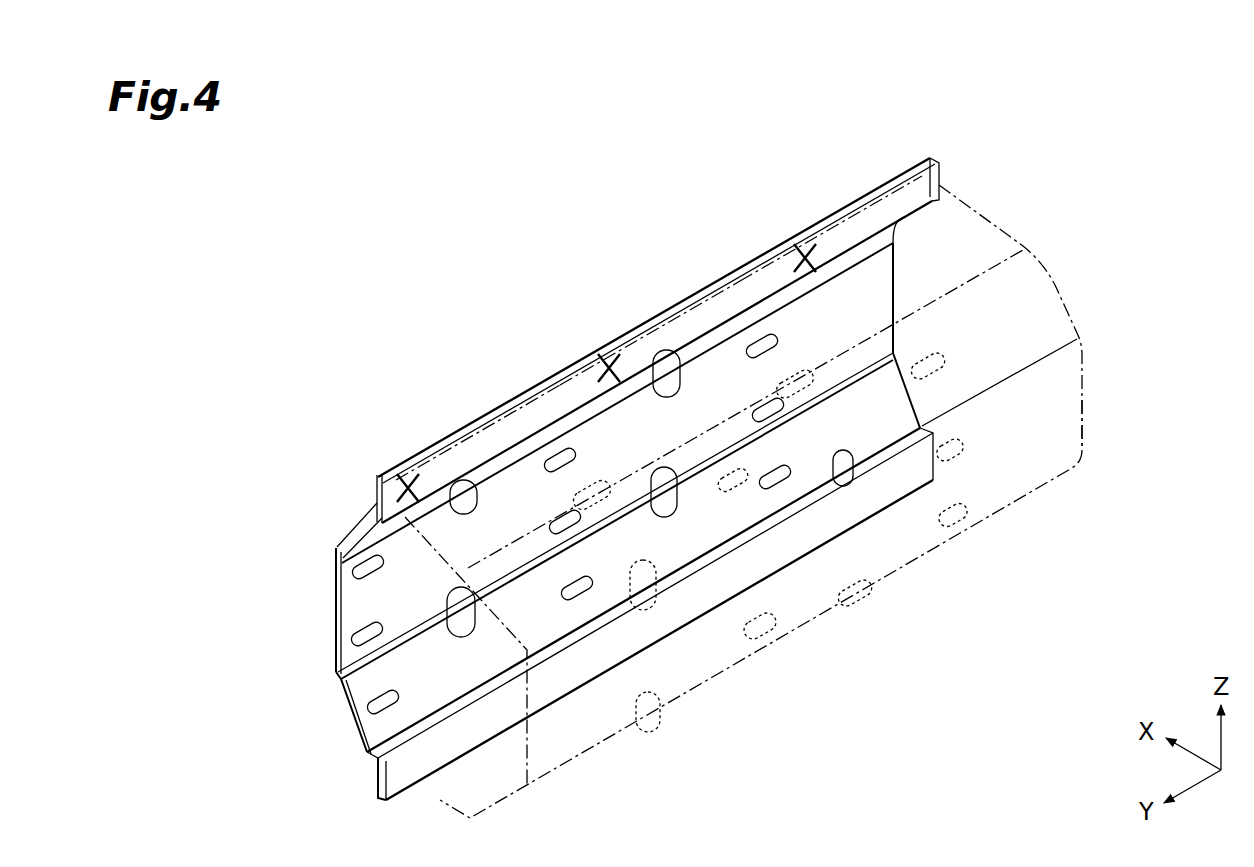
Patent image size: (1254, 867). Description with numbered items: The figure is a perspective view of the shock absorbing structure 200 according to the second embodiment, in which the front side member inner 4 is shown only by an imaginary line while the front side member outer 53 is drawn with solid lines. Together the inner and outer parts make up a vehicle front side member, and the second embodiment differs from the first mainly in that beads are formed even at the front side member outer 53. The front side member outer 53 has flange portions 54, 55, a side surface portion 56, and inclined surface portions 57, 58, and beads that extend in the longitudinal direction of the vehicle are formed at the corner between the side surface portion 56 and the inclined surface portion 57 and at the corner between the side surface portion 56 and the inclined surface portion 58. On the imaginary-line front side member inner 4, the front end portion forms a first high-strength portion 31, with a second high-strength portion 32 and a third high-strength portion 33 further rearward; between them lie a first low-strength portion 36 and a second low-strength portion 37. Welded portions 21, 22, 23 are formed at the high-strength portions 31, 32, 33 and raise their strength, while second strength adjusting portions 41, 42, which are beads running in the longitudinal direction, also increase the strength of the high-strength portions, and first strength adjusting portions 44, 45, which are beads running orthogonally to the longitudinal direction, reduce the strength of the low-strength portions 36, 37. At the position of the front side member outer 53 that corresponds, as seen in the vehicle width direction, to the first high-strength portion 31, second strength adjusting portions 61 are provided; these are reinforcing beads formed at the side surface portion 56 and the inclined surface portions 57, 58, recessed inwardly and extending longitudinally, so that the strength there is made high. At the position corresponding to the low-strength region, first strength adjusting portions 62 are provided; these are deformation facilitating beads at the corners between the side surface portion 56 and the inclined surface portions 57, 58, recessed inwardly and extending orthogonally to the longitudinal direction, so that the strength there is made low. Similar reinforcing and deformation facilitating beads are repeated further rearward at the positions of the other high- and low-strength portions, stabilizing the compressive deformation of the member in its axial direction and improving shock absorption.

The shock absorbing structure 200 is at (432, 192).
The front side member inner 4 is at (1053, 278).
The front side member outer 53 is at (318, 633).
The flange portion 54 is at (376, 488).
The flange portion 55 is at (372, 773).
The side surface portion 56 is at (336, 598).
The inclined surface portion 57 is at (350, 522).
The inclined surface portion 58 is at (354, 722).
The second strength adjusting portion 61 is at (400, 696).
The first strength adjusting portion 62 is at (470, 588).
The first low-strength portion 36 is at (490, 404).
The second low-strength portion 37 is at (690, 292).
The welded portion 21 is at (420, 472).
The welded portion 22 is at (600, 365).
The welded portion 23 is at (796, 252).
The first high-strength portion 31 is at (400, 463).
The second high-strength portion 32 is at (607, 350).
The third high-strength portion 33 is at (806, 236).
The second strength adjusting portion 41 is at (758, 468).
The second strength adjusting portion 42 is at (945, 360).
The first strength adjusting portion 44 is at (596, 475).
The first strength adjusting portion 45 is at (848, 458).